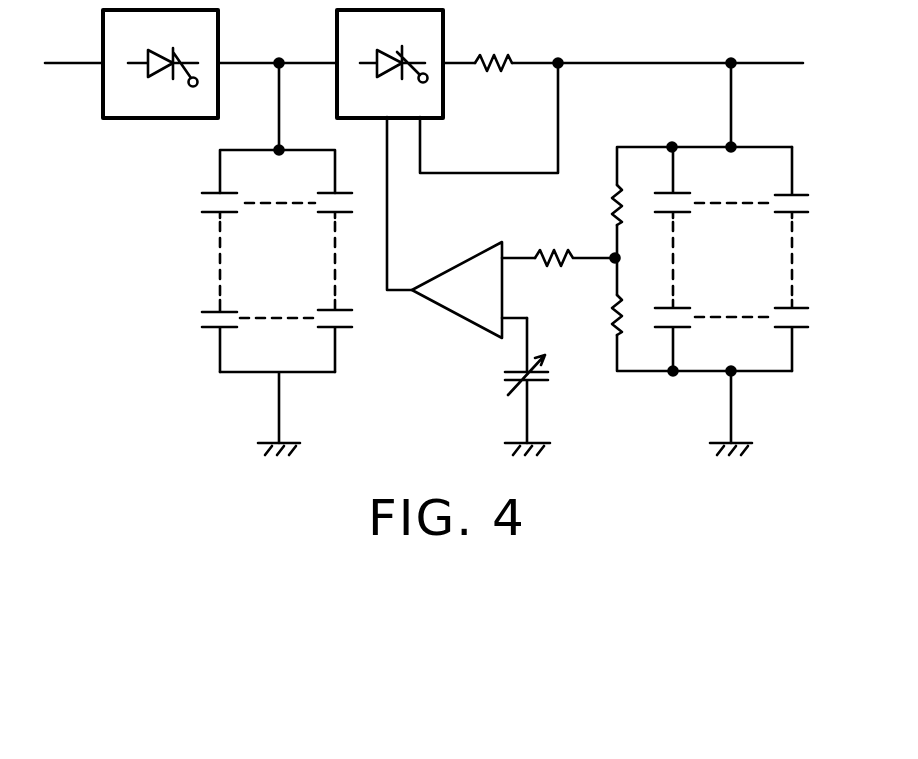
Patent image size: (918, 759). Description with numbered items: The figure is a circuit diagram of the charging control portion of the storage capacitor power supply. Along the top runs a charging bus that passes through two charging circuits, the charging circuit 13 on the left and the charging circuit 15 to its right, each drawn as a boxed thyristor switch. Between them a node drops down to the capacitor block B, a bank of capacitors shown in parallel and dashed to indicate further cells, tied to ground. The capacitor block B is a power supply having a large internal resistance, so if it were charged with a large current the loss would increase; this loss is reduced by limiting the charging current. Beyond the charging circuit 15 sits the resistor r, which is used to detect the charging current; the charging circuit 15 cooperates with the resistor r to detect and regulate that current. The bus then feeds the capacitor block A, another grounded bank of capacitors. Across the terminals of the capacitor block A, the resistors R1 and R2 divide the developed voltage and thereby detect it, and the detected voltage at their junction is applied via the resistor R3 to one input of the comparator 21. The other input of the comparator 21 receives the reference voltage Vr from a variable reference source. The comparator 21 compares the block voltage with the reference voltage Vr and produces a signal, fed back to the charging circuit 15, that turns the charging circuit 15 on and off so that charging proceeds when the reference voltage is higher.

The charging circuit 13 is at (218, 25).
The charging circuit 15 is at (443, 25).
The comparator 21 is at (452, 318).
The resistor r is at (493, 75).
The resistor R1 is at (598, 205).
The resistor R2 is at (597, 315).
The resistor R3 is at (575, 247).
The reference voltage Vr is at (540, 386).
The capacitor block A is at (706, 259).
The capacitor block B is at (218, 255).